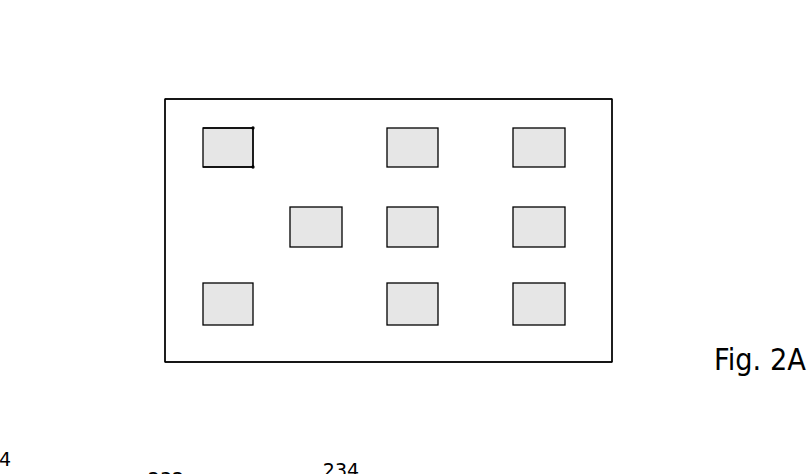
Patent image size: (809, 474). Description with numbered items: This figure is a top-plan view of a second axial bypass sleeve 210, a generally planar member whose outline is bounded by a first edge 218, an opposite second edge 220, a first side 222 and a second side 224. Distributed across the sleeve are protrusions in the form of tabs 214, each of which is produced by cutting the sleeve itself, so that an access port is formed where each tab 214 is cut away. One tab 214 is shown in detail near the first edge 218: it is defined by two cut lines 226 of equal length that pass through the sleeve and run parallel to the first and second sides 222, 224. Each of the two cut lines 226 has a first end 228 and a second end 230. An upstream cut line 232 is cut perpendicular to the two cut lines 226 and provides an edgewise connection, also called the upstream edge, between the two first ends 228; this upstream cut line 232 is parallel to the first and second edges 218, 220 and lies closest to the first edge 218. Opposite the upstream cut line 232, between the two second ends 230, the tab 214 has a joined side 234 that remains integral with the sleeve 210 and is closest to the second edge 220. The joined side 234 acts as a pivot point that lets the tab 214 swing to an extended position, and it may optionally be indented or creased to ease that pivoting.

The second axial bypass sleeve 210 is at (442, 199).
The tab 214 is at (392, 238).
The first edge 218 is at (165, 273).
The second edge 220 is at (612, 253).
The first side 222 is at (423, 98).
The second side 224 is at (365, 362).
The cut lines 226 is at (230, 128).
The first end 228 is at (203, 128).
The second end 230 is at (253, 128).
The upstream cut line 232 is at (203, 148).
The joined side 234 is at (253, 147).